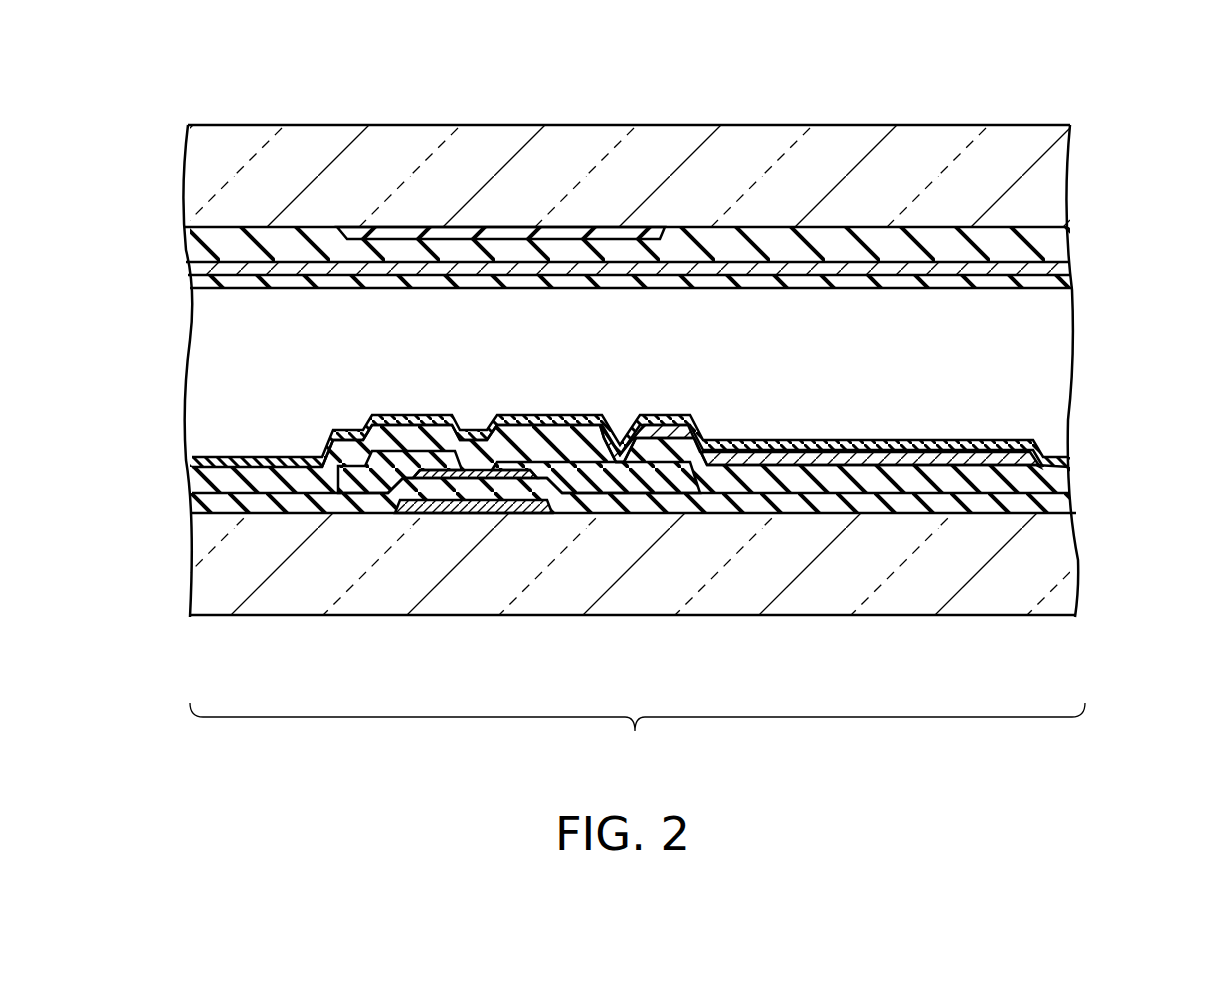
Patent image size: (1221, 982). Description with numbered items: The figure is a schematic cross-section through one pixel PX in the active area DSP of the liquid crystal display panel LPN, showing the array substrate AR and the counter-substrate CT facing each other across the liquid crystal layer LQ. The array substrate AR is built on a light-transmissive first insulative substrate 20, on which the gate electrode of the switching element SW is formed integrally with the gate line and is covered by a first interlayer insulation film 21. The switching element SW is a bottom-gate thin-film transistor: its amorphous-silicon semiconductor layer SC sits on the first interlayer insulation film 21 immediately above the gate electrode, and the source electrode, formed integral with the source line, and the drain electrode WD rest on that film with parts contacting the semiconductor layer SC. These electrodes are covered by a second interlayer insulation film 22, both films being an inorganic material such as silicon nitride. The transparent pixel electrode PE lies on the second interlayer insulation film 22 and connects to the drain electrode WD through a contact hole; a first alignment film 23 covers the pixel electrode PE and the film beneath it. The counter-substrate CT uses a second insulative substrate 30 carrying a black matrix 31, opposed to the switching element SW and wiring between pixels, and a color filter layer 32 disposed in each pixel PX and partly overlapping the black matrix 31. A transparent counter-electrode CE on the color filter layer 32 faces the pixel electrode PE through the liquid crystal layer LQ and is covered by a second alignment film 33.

The liquid crystal display panel LPN is at (1098, 107).
The counter-substrate CT is at (162, 127).
The array substrate AR is at (162, 457).
The liquid crystal layer LQ is at (207, 370).
The second insulative substrate 30 is at (1053, 178).
The black matrix 31 is at (487, 235).
The color filter layer 32 is at (1053, 241).
The counter-electrode CE is at (745, 268).
The second alignment film 33 is at (1053, 281).
The first insulative substrate 20 is at (1055, 582).
The first interlayer insulation film 21 is at (1053, 503).
The second interlayer insulation film 22 is at (1053, 483).
The first alignment film 23 is at (1055, 460).
The pixel electrode PE is at (833, 463).
The switching element SW is at (462, 528).
The semiconductor layer SC is at (477, 422).
The drain electrode WD is at (540, 417).
The pixel PX is at (796, 634).
The active area DSP is at (637, 733).